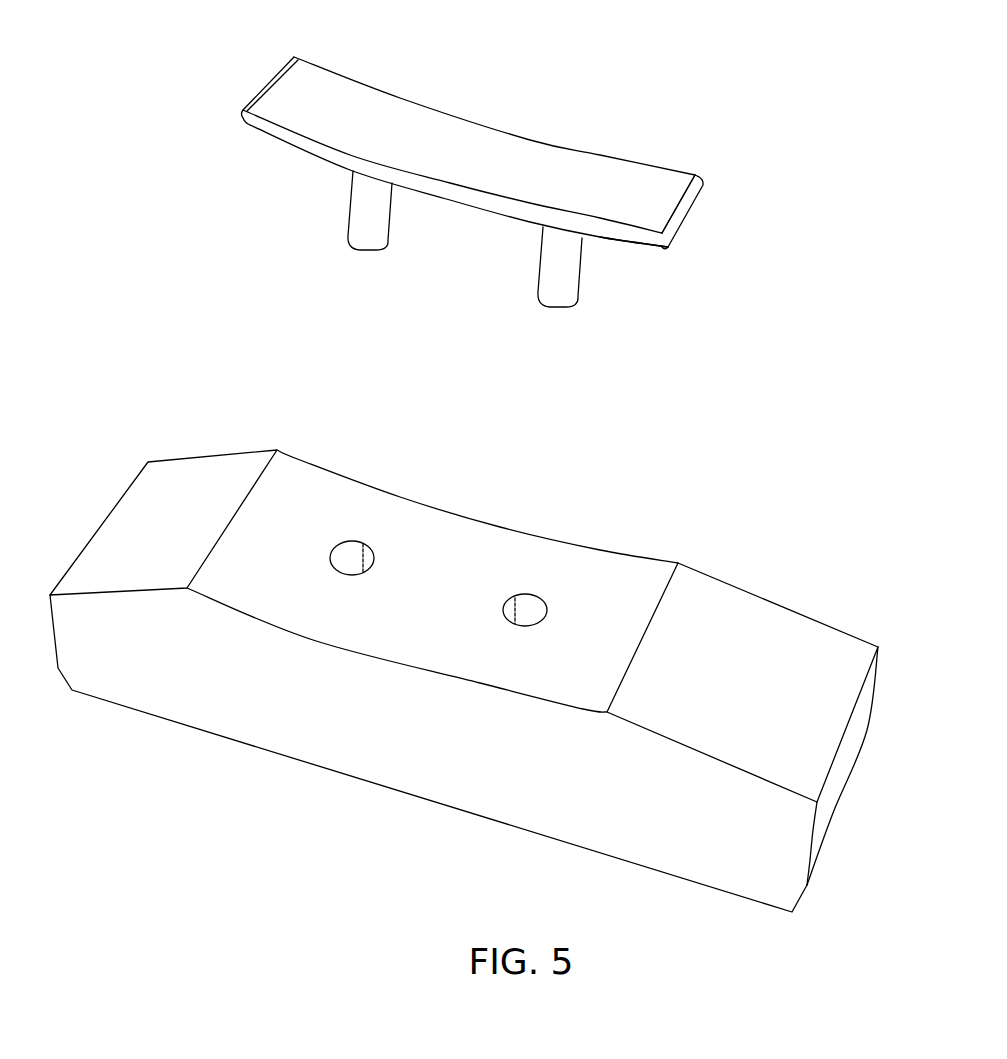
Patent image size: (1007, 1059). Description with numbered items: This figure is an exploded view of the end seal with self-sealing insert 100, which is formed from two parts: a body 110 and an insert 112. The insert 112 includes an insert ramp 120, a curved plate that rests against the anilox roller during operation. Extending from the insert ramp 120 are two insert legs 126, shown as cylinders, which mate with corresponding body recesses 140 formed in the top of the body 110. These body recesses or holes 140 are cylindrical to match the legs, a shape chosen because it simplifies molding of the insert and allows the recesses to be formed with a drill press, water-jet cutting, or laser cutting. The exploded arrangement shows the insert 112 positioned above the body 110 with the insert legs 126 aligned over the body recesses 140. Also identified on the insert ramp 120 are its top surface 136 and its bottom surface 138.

The end seal with self-sealing insert 100 is at (522, 674).
The body 110 is at (780, 637).
The insert 112 is at (538, 214).
The insert ramp 120 is at (498, 152).
The insert legs 126 is at (376, 240).
The top surface 136 is at (652, 203).
The bottom surface 138 is at (635, 263).
The body recesses 140 is at (522, 604).